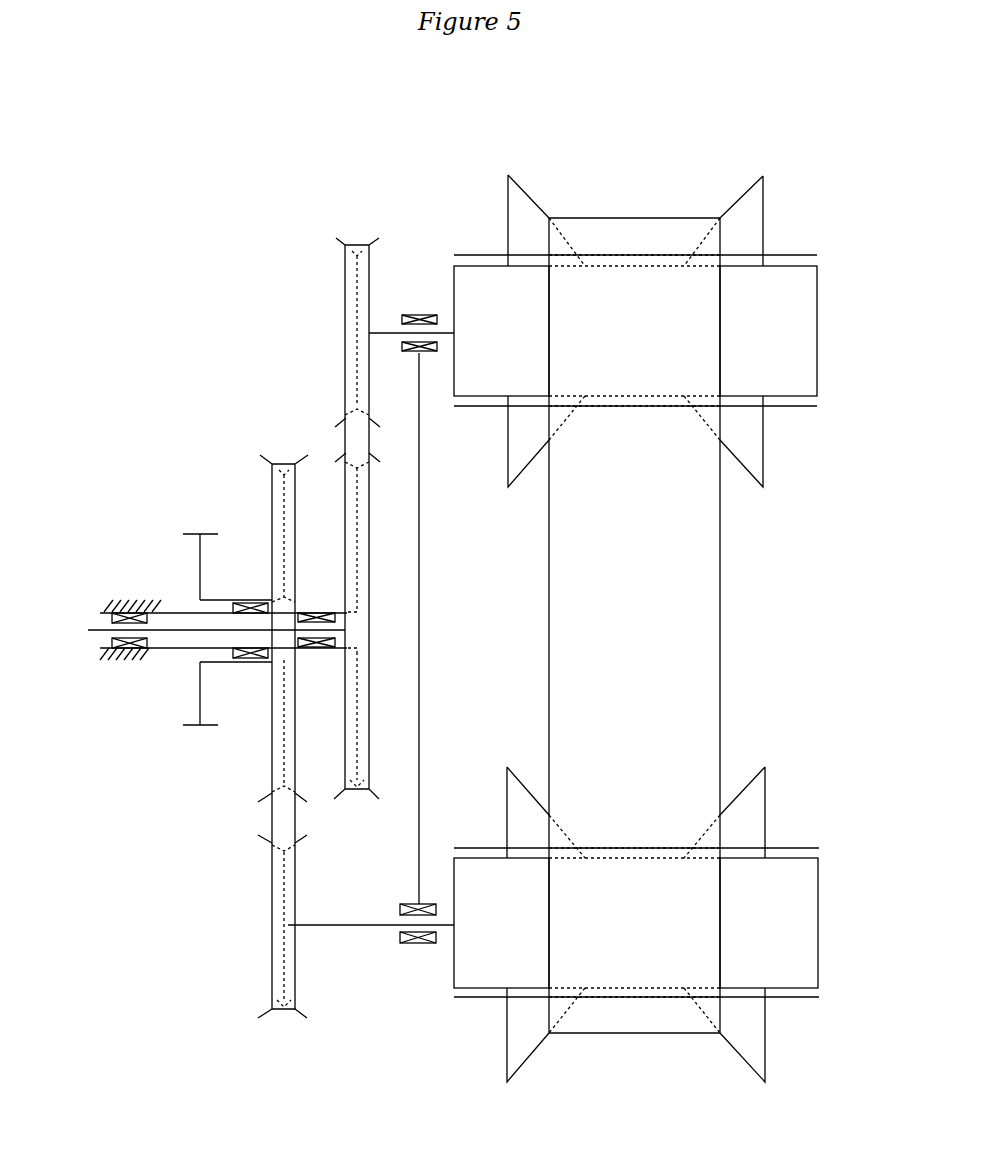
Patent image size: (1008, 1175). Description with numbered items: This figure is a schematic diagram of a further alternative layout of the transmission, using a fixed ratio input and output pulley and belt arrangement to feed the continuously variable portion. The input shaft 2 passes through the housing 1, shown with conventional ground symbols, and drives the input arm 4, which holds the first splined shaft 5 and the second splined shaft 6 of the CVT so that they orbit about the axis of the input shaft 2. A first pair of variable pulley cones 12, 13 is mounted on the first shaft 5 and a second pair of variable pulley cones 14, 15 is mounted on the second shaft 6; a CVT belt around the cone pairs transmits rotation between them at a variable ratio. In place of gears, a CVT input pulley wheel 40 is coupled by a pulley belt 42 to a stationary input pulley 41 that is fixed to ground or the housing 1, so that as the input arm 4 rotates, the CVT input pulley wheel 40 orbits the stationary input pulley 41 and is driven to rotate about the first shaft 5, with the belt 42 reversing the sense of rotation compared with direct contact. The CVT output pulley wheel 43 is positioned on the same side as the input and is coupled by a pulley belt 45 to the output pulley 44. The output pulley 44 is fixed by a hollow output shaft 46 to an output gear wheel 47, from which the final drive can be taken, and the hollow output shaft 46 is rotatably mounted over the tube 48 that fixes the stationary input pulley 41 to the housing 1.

The housing 1 is at (125, 605).
The input shaft 2 is at (95, 631).
The input arm 4 is at (417, 843).
The first splined shaft 5 is at (787, 377).
The second splined shaft 6 is at (782, 875).
The variable pulley cone 12 is at (525, 215).
The variable pulley cone 13 is at (747, 213).
The variable pulley cone 14 is at (518, 1023).
The variable pulley cone 15 is at (750, 1027).
The CVT input pulley wheel 40 is at (337, 242).
The stationary input pulley 41 is at (333, 452).
The pulley belt 42 is at (355, 437).
The CVT output pulley wheel 43 is at (258, 1018).
The output pulley 44 is at (258, 802).
The pulley belt 45 is at (278, 822).
The hollow output shaft 46 is at (219, 598).
The output gear wheel 47 is at (198, 565).
The tube 48 is at (182, 650).